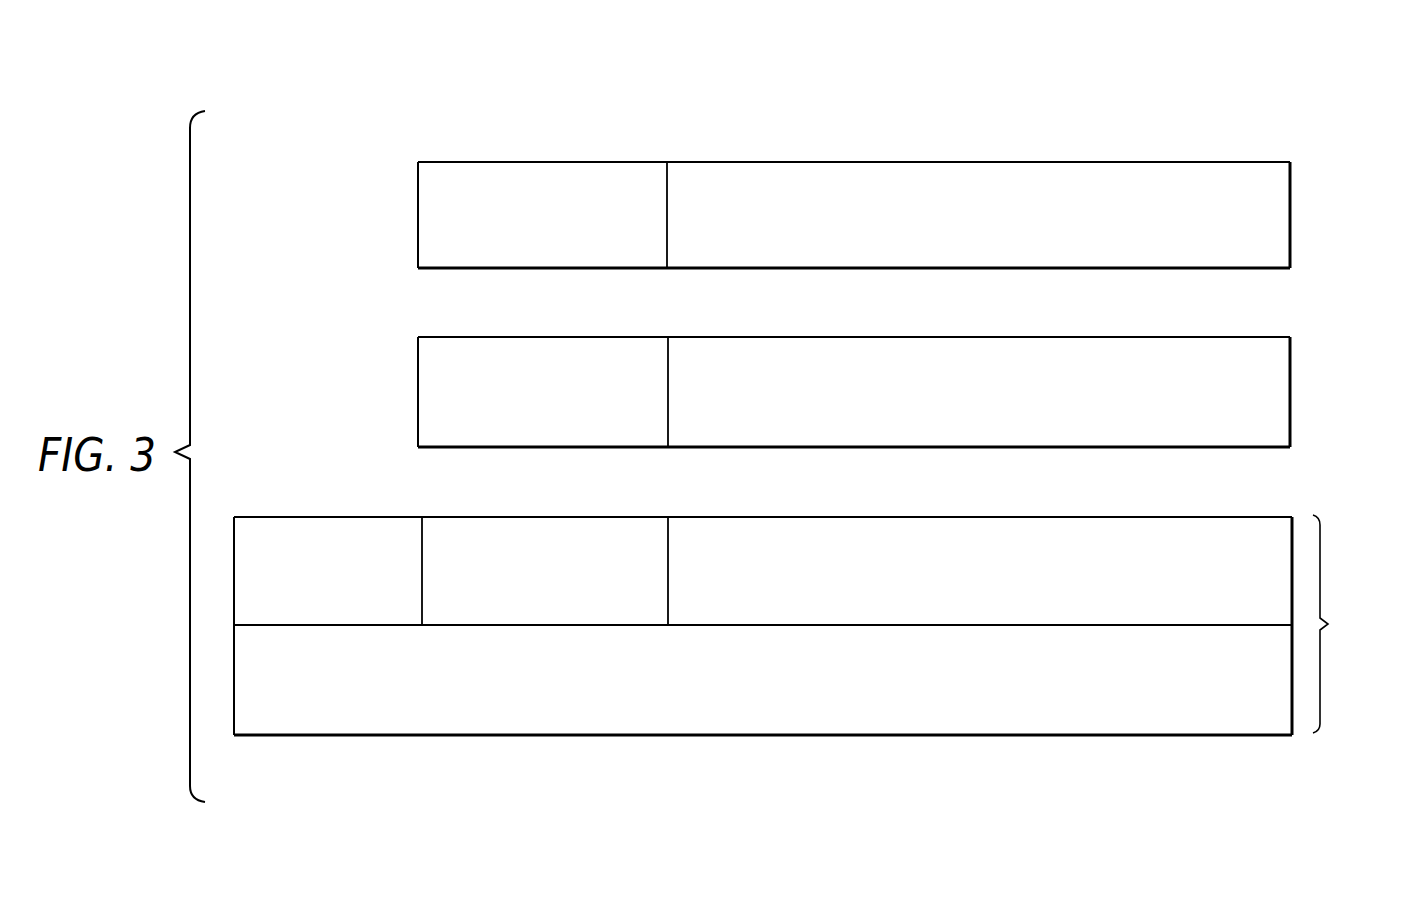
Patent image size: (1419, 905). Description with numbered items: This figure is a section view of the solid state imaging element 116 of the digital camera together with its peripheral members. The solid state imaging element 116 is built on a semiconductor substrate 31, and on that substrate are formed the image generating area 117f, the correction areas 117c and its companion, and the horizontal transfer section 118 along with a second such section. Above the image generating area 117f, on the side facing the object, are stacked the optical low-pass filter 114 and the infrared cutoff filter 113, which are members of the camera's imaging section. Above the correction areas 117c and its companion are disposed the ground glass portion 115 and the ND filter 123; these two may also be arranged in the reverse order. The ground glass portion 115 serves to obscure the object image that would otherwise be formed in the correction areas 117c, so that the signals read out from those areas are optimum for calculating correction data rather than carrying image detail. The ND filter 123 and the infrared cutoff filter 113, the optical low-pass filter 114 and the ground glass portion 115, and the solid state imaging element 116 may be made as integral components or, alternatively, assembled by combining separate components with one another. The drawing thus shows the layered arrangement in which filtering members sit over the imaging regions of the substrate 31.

The ND filter 123 is at (545, 162).
The infrared cutoff filter 113 is at (977, 161).
The ground glass portion 115 is at (544, 337).
The optical low-pass filter 114 is at (978, 337).
The solid state imaging element 116 is at (806, 631).
The horizontal transfer section 118 is at (328, 517).
The correction area 117c is at (546, 517).
The image generating area 117f is at (977, 517).
The semiconductor substrate 31 is at (765, 736).